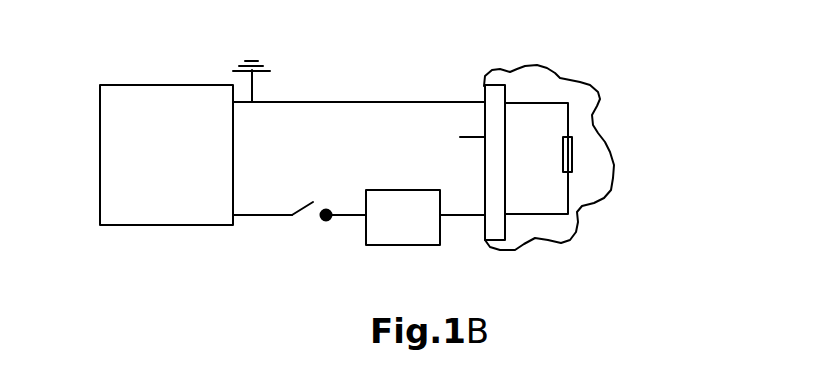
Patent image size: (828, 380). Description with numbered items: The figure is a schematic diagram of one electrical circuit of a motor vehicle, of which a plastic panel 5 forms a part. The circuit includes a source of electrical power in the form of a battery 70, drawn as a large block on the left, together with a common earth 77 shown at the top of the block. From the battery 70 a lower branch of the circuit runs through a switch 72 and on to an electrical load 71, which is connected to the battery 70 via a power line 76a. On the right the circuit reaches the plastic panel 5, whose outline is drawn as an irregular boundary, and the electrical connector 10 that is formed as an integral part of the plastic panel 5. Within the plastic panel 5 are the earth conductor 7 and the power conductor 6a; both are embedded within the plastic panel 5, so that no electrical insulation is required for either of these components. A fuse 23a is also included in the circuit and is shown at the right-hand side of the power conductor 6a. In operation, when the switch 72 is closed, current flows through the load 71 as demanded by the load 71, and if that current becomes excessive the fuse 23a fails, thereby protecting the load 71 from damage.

The battery 70 is at (100, 110).
The common earth 77 is at (358, 102).
The electrical connector 10 is at (460, 137).
The switch 72 is at (313, 202).
The electrical load 71 is at (373, 245).
The power line 76a is at (468, 217).
The earth conductor 7 is at (548, 101).
The power conductor 6a is at (548, 215).
The fuse 23a is at (572, 157).
The plastic panel 5 is at (597, 90).